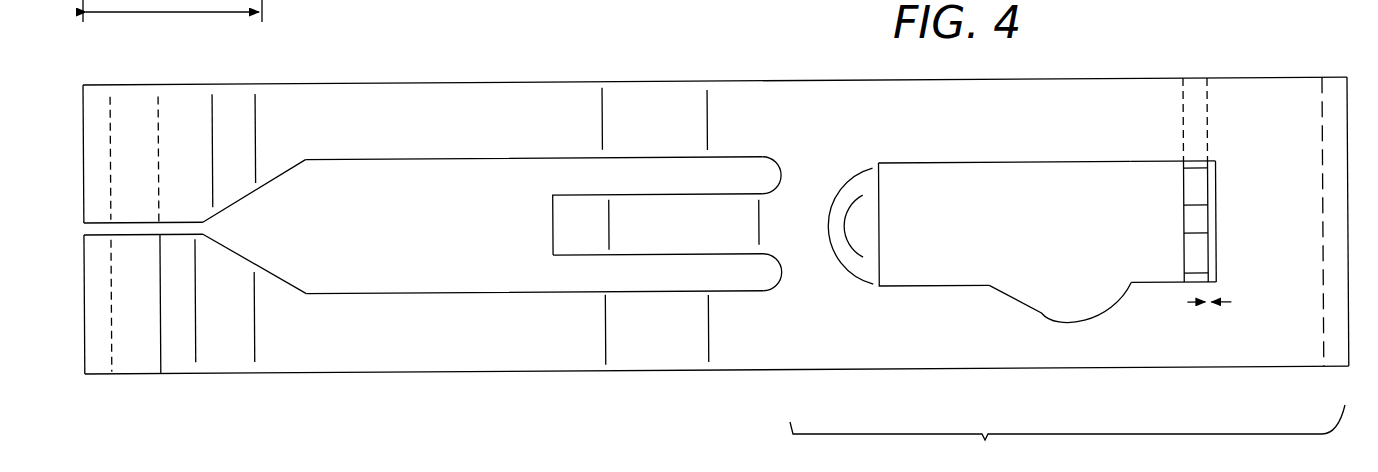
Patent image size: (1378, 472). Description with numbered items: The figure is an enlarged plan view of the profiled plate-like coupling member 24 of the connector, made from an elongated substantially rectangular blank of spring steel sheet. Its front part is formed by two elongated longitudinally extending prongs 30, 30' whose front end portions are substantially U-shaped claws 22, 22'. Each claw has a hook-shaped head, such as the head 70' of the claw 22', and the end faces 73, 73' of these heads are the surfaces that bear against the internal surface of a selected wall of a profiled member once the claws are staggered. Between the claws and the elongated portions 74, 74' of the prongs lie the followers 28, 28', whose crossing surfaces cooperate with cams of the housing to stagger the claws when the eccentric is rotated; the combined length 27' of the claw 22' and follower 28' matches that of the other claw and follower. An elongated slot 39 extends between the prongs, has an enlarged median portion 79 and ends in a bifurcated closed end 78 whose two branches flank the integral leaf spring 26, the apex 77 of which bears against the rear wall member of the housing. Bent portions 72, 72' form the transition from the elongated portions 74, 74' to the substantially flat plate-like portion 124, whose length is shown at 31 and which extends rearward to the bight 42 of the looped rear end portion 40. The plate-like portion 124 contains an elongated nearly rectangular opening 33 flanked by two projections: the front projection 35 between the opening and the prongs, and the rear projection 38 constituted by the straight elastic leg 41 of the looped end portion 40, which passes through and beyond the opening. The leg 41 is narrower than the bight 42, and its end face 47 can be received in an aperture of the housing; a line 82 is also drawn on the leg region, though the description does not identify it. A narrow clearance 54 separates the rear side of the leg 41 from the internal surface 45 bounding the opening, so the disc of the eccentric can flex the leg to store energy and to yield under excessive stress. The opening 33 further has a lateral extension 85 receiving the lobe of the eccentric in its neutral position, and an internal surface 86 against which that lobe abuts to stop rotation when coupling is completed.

The claw 22 is at (92, 136).
The claw 22' is at (95, 333).
The coupling member 24 is at (777, 74).
The leaf spring 26 is at (666, 239).
The combined length of claw and follower 27' is at (172, 23).
The follower 28 is at (252, 116).
The follower 28' is at (240, 352).
The prong 30 is at (715, 65).
The prong 30' is at (717, 400).
The length of plate-like portion 31 is at (1067, 438).
The opening 33 is at (985, 243).
The projection 35 is at (850, 230).
The projection 38 is at (1182, 275).
The slot 39 is at (178, 224).
The looped rear end portion 40 is at (1297, 85).
The leg 41 is at (1180, 262).
The bight 42 is at (1350, 165).
The internal surface 45 is at (1216, 235).
The end face 47 is at (1193, 194).
The clearance 54 is at (1214, 317).
The hook-shaped head 70' is at (161, 335).
The bent portion 72 is at (655, 100).
The bent portion 72' is at (657, 363).
The end face 73 is at (177, 136).
The end face 73' is at (188, 332).
The elongated portion 74 is at (286, 136).
The elongated portion 74' is at (301, 333).
The apex 77 is at (568, 231).
The bifurcated closed end 78 is at (782, 273).
The enlarged median portion 79 is at (390, 226).
The fold line 82 is at (1195, 229).
The lateral extension 85 is at (1041, 316).
The internal surface 86 is at (1122, 178).
The plate-like portion 124 is at (960, 146).